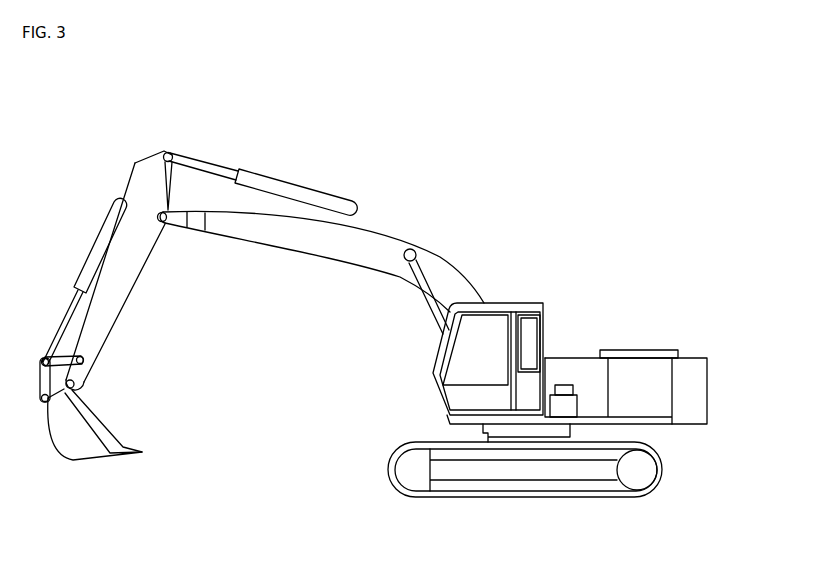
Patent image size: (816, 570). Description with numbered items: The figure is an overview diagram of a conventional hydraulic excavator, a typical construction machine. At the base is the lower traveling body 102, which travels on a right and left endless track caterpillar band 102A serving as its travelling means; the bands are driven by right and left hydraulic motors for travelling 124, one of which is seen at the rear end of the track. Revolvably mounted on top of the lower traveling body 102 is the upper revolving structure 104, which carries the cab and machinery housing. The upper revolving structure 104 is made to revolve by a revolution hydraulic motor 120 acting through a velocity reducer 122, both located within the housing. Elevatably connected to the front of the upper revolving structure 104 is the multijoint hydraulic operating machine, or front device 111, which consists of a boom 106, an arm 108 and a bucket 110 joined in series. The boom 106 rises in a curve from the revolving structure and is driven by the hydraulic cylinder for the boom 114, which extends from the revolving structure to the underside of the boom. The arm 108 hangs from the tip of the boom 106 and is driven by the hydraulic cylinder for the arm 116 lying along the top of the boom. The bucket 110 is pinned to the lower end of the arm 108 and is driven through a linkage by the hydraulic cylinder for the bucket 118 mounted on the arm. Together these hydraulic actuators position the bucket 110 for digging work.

The lower traveling body 102 is at (389, 477).
The endless track caterpillar band 102A is at (663, 463).
The upper revolving structure 104 is at (712, 398).
The boom 106 is at (277, 237).
The arm 108 is at (125, 290).
The bucket 110 is at (72, 447).
The multijoint hydraulic operating machine (front device) 111 is at (228, 294).
The hydraulic cylinder for a boom 114 is at (420, 288).
The hydraulic cylinder for an arm 116 is at (287, 186).
The hydraulic cylinder for a bucket 118 is at (90, 262).
The revolution hydraulic motor 120 is at (573, 405).
The velocity reducer 122 is at (560, 383).
The hydraulic motor for travelling 124 is at (638, 482).